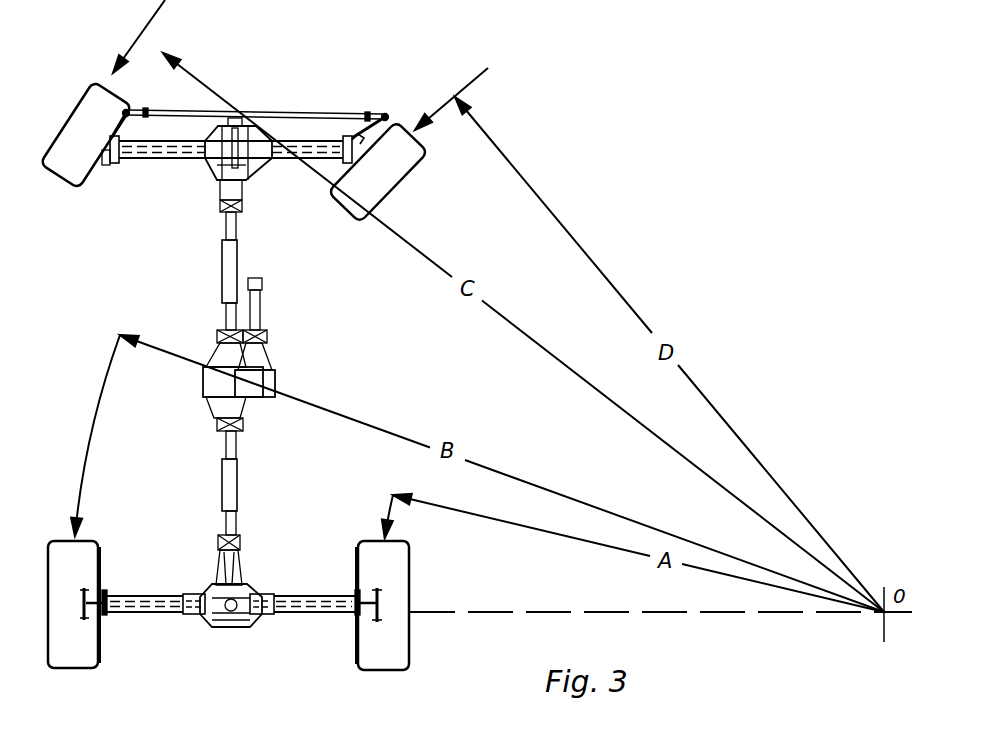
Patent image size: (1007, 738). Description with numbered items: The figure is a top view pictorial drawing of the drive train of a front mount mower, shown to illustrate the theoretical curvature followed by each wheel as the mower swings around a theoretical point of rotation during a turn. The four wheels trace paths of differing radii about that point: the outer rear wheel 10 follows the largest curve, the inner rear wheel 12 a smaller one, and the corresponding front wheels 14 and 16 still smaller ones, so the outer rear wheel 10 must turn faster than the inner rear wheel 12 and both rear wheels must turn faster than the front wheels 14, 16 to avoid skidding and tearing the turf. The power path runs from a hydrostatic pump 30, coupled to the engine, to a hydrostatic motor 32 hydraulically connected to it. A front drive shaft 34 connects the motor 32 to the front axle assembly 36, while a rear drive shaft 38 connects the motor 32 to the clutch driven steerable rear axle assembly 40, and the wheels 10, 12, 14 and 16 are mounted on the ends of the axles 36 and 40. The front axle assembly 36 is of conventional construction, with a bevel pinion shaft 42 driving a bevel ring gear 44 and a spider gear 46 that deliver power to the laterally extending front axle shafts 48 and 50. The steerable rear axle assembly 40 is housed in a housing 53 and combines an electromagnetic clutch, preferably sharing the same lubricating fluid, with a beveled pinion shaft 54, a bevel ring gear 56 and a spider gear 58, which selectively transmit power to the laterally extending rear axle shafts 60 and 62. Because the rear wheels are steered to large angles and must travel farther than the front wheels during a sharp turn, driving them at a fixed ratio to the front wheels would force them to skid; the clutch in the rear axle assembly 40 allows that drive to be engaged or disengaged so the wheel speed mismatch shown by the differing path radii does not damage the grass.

The outer rear wheel 10 is at (347, 203).
The inner rear wheel 12 is at (83, 190).
The front wheel 14 is at (358, 552).
The front wheel 16 is at (93, 550).
The pump 30 is at (262, 393).
The motor 32 is at (223, 387).
The front drive shaft 34 is at (227, 508).
The front axle assembly 36 is at (243, 627).
The rear drive shaft 38 is at (222, 274).
The clutch driven steerable rear axle assembly 40 is at (262, 106).
The bevel pinion shaft 42 is at (208, 588).
The bevel ring gear 44 is at (248, 590).
The spider gear 46 is at (213, 613).
The front axle shaft 48 is at (310, 613).
The front axle shaft 50 is at (137, 612).
The housing 53 is at (228, 130).
The beveled pinion shaft 54 is at (215, 177).
The bevel ring gear 56 is at (242, 112).
The spider gear 58 is at (232, 102).
The rear axle shaft 60 is at (304, 163).
The rear axle shaft 62 is at (160, 164).